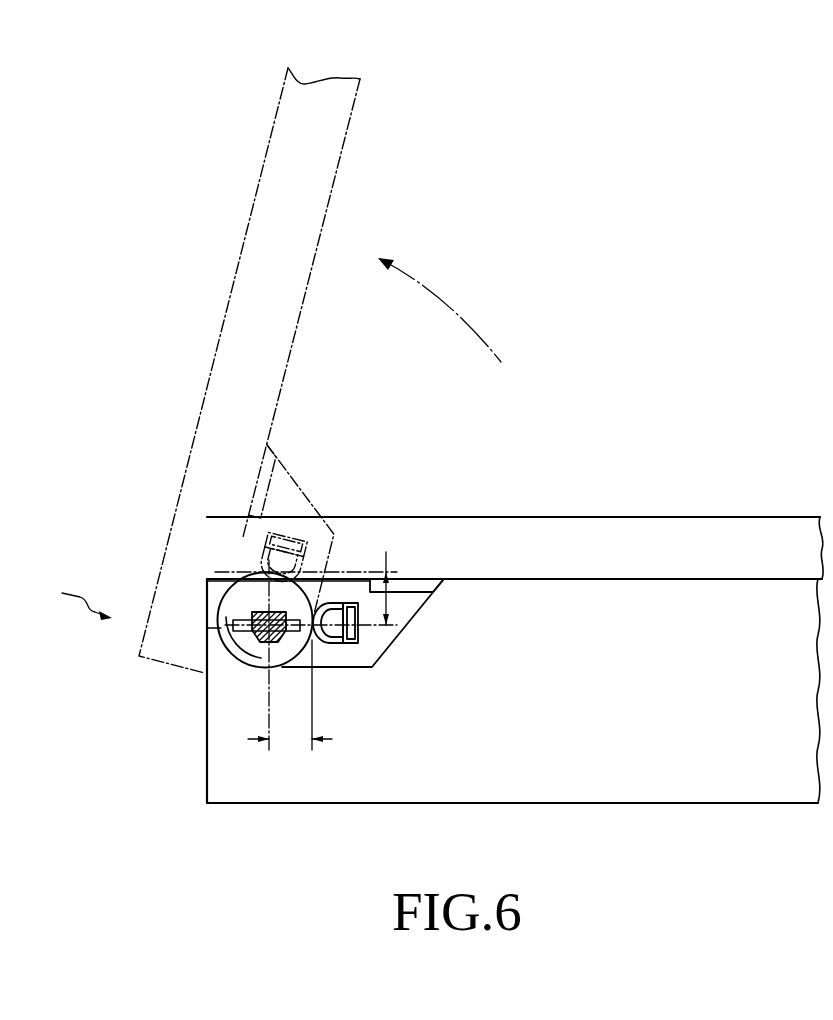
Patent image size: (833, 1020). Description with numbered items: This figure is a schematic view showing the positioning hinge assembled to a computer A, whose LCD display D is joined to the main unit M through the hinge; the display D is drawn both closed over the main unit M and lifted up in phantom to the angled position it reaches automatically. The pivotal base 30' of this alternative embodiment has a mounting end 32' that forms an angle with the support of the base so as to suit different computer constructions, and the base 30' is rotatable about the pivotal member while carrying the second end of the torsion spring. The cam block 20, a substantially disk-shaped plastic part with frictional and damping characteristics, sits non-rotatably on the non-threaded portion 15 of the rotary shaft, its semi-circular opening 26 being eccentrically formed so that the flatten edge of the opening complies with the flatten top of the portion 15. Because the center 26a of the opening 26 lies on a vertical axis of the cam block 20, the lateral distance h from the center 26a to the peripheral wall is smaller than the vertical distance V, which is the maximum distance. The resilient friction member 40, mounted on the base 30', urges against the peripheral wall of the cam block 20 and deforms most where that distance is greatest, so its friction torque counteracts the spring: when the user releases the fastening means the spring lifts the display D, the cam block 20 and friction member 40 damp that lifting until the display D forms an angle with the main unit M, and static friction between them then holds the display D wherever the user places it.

The LCD display D is at (251, 242).
The main unit M is at (352, 790).
The computer A is at (74, 594).
The non-threaded portion 15 is at (213, 583).
The cam block 20 is at (210, 626).
The semi-circular opening 26 is at (257, 650).
The center 26a is at (272, 655).
The pivotal base 30' is at (353, 535).
The mounting end 32' is at (378, 499).
The resilient friction member 40 is at (300, 540).
The vertical distance V is at (387, 579).
The lateral distance h is at (290, 696).